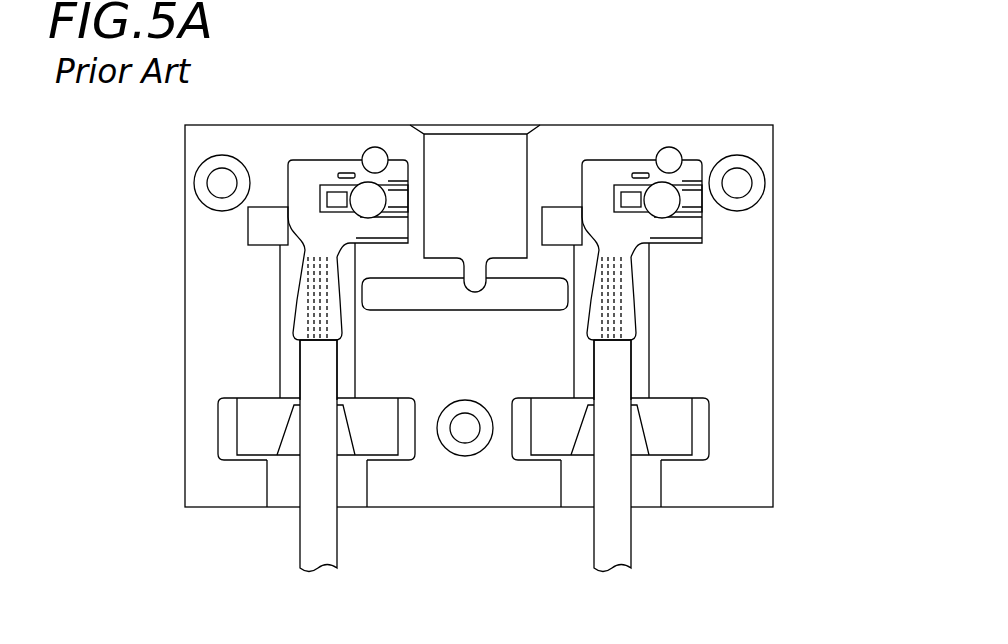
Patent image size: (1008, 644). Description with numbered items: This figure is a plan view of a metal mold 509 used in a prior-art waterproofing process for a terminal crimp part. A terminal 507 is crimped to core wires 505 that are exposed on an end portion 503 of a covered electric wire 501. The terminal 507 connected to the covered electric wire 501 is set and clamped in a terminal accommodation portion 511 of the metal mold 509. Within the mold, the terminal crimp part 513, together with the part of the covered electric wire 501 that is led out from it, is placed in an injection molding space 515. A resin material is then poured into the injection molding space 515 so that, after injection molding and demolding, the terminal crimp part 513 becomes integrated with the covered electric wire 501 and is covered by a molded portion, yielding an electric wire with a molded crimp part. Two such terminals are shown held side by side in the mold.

The covered electric wire 501 is at (300, 540).
The end portion 503 is at (300, 357).
The core wires 505 is at (297, 285).
The terminal 507 is at (318, 160).
The metal mold 509 is at (773, 143).
The terminal accommodation portion 511 is at (298, 182).
The terminal crimp part 513 is at (294, 325).
The injection molding space 515 is at (280, 384).